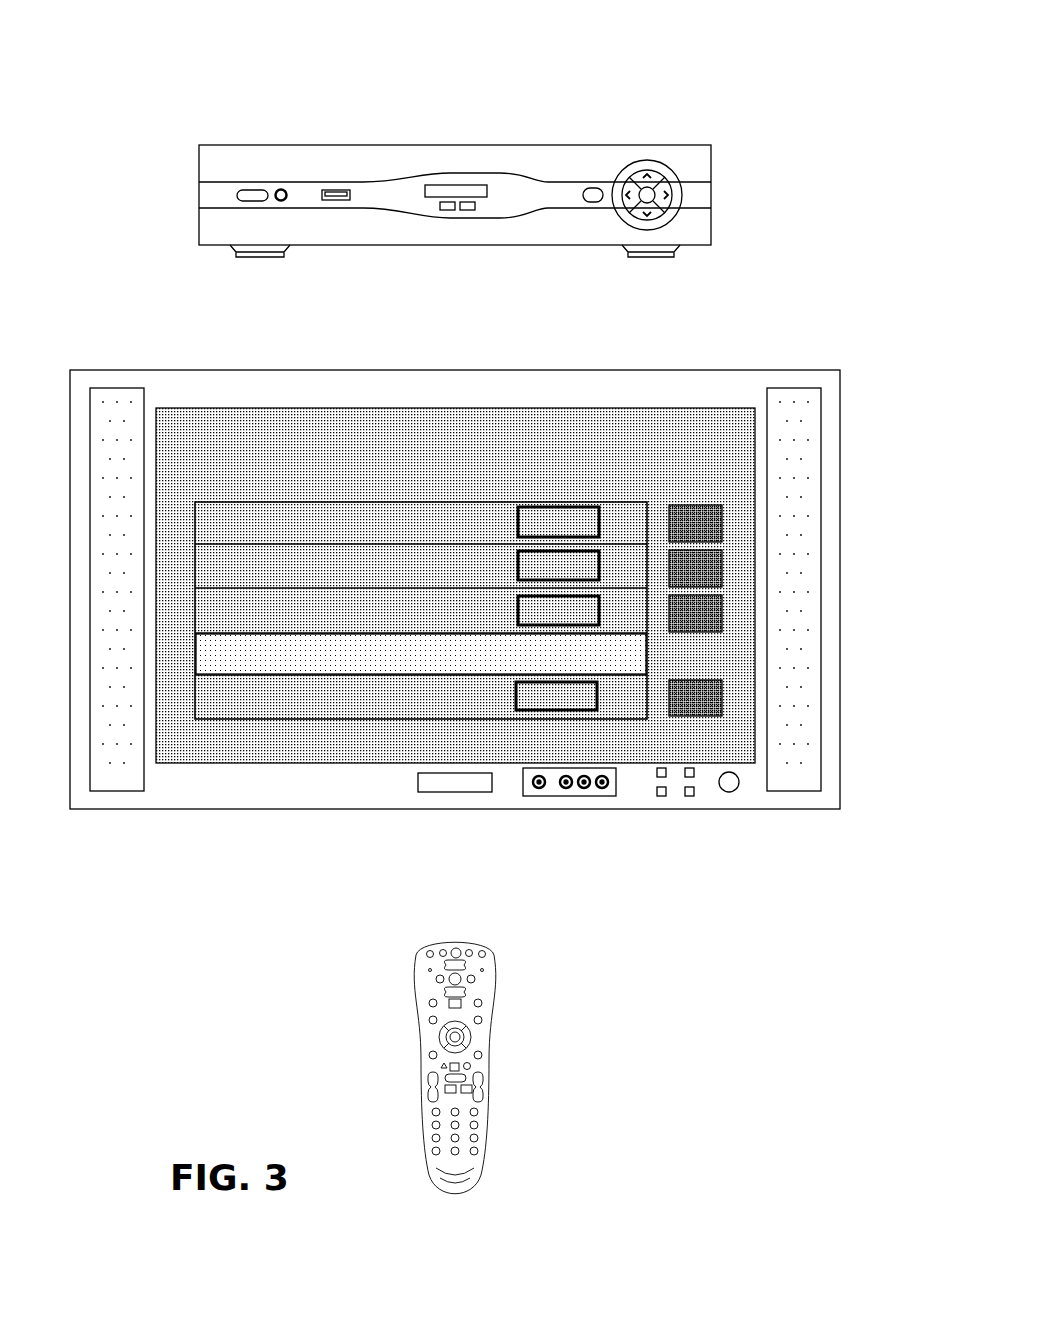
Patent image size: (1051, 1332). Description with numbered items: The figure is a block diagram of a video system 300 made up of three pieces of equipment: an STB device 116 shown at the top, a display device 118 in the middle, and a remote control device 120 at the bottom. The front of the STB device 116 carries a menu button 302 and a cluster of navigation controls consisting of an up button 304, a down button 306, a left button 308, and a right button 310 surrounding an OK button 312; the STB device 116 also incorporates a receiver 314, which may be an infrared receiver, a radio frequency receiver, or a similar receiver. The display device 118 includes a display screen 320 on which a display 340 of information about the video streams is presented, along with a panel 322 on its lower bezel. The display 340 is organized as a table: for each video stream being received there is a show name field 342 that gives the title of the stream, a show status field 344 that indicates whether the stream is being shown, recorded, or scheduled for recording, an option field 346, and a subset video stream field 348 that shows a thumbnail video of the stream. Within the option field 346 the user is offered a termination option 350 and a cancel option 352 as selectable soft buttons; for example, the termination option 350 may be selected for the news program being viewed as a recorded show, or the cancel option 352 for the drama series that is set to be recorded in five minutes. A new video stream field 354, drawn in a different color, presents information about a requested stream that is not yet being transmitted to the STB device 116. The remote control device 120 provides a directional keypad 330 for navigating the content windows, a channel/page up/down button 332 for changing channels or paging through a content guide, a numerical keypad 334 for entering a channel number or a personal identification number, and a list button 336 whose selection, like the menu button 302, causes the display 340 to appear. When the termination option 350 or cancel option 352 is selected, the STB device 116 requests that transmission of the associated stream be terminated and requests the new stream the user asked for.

The STB device 116 is at (496, 135).
The video system 300 is at (822, 130).
The menu button 302 is at (602, 187).
The up button 304 is at (655, 176).
The right button 310 is at (668, 186).
The OK button 312 is at (656, 197).
The down button 306 is at (657, 214).
The left button 308 is at (637, 218).
The receiver 314 is at (473, 210).
The display device 118 is at (686, 366).
The display screen 320 is at (259, 764).
The television display panel 322 is at (421, 783).
The display 340 is at (278, 424).
The show name field 342 is at (264, 489).
The show status field 344 is at (397, 491).
The option field 346 is at (564, 479).
The subset video stream field 348 is at (669, 504).
The termination option 350 is at (521, 548).
The cancel option 352 is at (598, 700).
The new video stream field 354 is at (227, 655).
The remote control device 120 is at (496, 1131).
The directional keypad 330 is at (472, 1038).
The channel/page up/down button 332 is at (479, 1078).
The numerical keypad 334 is at (433, 1100).
The list button 336 is at (452, 1172).